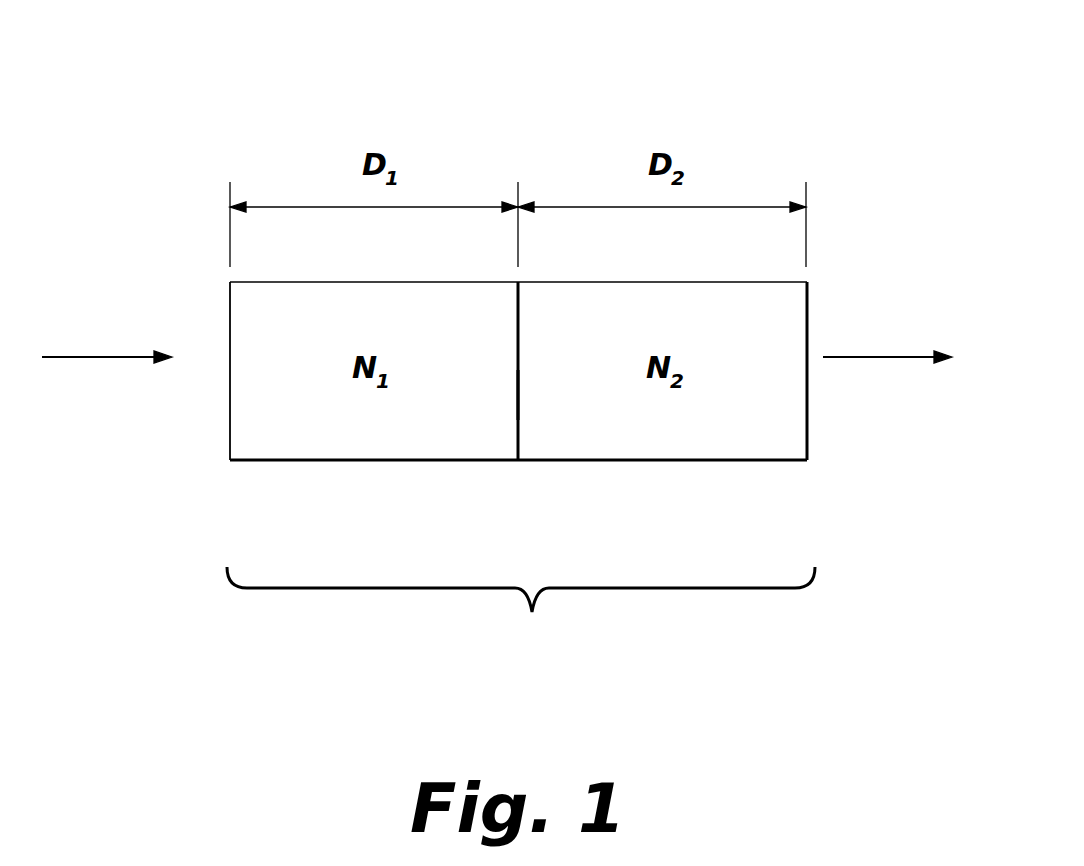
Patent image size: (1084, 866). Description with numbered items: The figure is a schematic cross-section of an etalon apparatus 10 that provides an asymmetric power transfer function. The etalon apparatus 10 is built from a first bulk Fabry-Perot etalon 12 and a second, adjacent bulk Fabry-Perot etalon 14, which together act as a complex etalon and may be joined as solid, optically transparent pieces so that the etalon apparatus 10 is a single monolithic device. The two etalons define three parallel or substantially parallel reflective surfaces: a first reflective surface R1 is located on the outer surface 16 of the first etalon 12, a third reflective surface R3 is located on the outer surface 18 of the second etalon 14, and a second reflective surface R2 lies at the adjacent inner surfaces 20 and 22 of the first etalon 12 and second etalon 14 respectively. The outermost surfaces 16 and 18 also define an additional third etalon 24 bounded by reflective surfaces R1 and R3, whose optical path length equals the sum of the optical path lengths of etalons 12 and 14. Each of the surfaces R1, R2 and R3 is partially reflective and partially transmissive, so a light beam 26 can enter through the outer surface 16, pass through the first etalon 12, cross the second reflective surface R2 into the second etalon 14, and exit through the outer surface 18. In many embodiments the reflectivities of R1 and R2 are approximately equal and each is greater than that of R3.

The etalon apparatus 10 is at (762, 86).
The first bulk Fabry-Perot etalon 12 is at (392, 450).
The second bulk Fabry-Perot etalon 14 is at (688, 450).
The outer surface of etalon 12 16 is at (230, 340).
The outer surface of etalon 14 18 is at (807, 318).
The inner surface of etalon 12 20 is at (518, 305).
The inner surface of etalon 14 22 is at (518, 395).
The third etalon 24 is at (521, 607).
The light beam 26 is at (105, 359).
The first reflective surface R1 is at (230, 462).
The second reflective surface R2 is at (516, 462).
The third reflective surface R3 is at (807, 462).